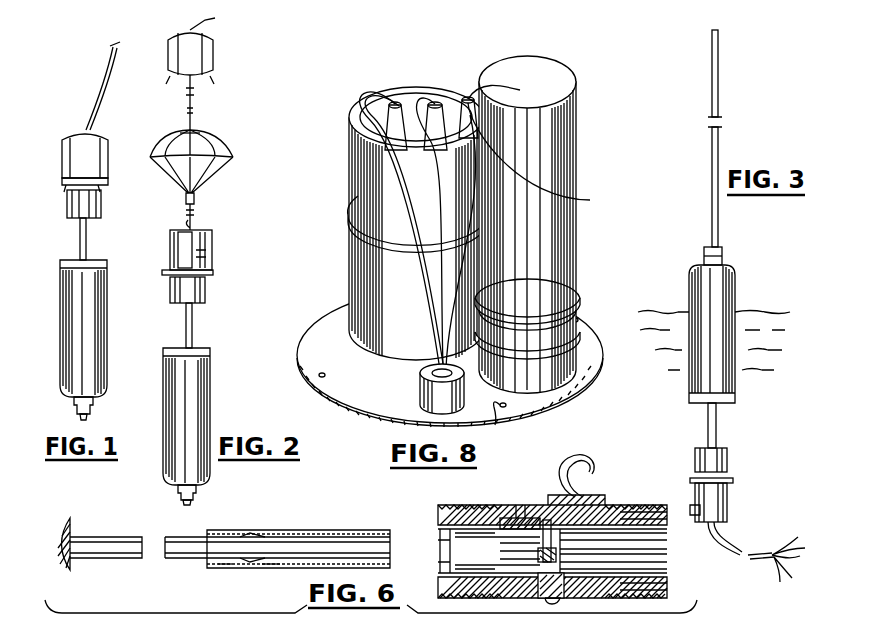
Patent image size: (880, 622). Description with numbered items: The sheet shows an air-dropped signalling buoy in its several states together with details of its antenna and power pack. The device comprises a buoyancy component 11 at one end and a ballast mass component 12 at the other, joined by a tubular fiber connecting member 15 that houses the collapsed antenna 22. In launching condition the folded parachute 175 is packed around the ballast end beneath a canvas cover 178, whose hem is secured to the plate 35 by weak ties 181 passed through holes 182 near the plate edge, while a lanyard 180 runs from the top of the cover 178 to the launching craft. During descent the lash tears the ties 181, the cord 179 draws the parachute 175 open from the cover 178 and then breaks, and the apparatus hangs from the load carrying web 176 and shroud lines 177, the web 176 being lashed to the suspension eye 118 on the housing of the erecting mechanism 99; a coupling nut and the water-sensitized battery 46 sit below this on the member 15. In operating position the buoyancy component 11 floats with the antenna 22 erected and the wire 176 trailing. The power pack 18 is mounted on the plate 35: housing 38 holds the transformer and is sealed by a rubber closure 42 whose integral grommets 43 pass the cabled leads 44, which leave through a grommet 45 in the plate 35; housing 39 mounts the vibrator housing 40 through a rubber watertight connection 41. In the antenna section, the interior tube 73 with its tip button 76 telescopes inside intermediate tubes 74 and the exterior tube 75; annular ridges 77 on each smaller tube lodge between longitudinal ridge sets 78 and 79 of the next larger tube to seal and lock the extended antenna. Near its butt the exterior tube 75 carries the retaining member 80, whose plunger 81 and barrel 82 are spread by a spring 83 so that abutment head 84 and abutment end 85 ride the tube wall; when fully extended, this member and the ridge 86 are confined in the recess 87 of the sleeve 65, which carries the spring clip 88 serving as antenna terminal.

In FIG. 1, the buoyancy component 11 is at (105, 312).
In FIG. 2, the buoyancy component 11 is at (212, 366).
In FIG. 3, the buoyancy component 11 is at (737, 297).
In FIG. 1, the ballast mass component 12 is at (102, 193).
In FIG. 2, the ballast mass component 12 is at (158, 280).
In FIG. 3, the ballast mass component 12 is at (740, 488).
In FIG. 1, the connecting member 15 is at (88, 245).
In FIG. 2, the connecting member 15 is at (194, 338).
In FIG. 3, the connecting member 15 is at (718, 413).
In FIG. 6, the connecting member 15 is at (636, 505).
In FIG. 8, the power pack 18 is at (345, 120).
In FIG. 3, the antenna 22 is at (719, 146).
In FIG. 6, the antenna 22 is at (326, 530).
In FIG. 8, the plate 35 is at (312, 326).
In FIG. 8, the housing 38 is at (354, 254).
In FIG. 8, the housing 39 is at (567, 363).
In FIG. 8, the housing 40 is at (569, 183).
In FIG. 8, the watertight connection 41 is at (580, 314).
In FIG. 8, the closure 42 is at (365, 167).
In FIG. 8, the grommets 43 is at (448, 100).
In FIG. 8, the leads 44 is at (433, 312).
In FIG. 8, the grommet 45 is at (420, 393).
In FIG. 2, the battery 46 is at (207, 296).
In FIG. 3, the battery 46 is at (696, 455).
In FIG. 6, the sleeve 65 is at (550, 500).
In FIG. 6, the interior tube 73 is at (190, 538).
In FIG. 6, the intermediate tubes 74 is at (376, 536).
In FIG. 6, the exterior tube 75 is at (452, 541).
In FIG. 6, the button 76 is at (63, 562).
In FIG. 6, the annular external ridges 77 is at (285, 538).
In FIG. 6, the internal ridges 78 is at (222, 567).
In FIG. 6, the longitudinal ridges 79 is at (270, 566).
In FIG. 6, the retaining member 80 is at (645, 560).
In FIG. 6, the plunger 81 is at (542, 560).
In FIG. 6, the barrel 82 is at (580, 565).
In FIG. 6, the spring 83 is at (502, 562).
In FIG. 6, the abutment head 84 is at (521, 505).
In FIG. 6, the abutment end 85 is at (542, 592).
In FIG. 6, the annular external ridge 86 is at (470, 548).
In FIG. 6, the recess 87 is at (510, 505).
In FIG. 6, the spring clip 88 is at (581, 476).
In FIG. 2, the antenna erecting mechanism 99 is at (198, 258).
In FIG. 2, the suspension eye 118 is at (194, 222).
In FIG. 2, the parachute 175 is at (205, 150).
In FIG. 2, the load carrying web 176 is at (186, 200).
In FIG. 3, the load carrying web 176 is at (712, 541).
In FIG. 6, the load carrying web 176 is at (655, 540).
In FIG. 2, the shroud lines 177 is at (222, 177).
In FIG. 1, the cover 178 is at (66, 140).
In FIG. 2, the cover 178 is at (213, 44).
In FIG. 2, the cord 179 is at (194, 108).
In FIG. 1, the lanyard 180 is at (108, 93).
In FIG. 1, the ties 181 is at (70, 192).
In FIG. 2, the ties 181 is at (166, 76).
In FIG. 8, the holes 182 is at (510, 425).